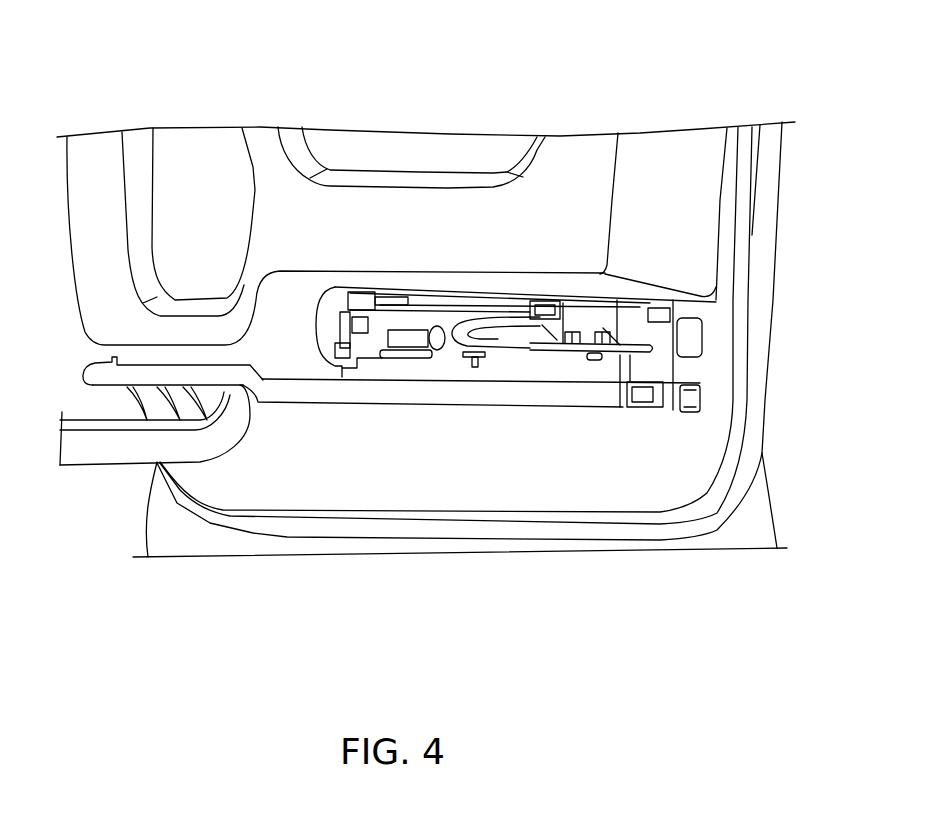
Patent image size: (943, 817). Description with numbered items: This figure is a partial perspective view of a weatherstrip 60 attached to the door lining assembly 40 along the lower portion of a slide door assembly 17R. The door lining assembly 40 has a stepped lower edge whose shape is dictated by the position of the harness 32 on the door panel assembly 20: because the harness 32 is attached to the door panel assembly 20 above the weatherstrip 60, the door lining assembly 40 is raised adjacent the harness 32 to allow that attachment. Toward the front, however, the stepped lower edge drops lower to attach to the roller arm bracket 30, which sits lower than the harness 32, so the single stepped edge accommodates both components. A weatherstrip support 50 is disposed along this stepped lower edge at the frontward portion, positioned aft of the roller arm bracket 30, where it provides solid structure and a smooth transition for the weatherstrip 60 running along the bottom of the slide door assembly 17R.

The slide door assembly 17R is at (97, 500).
The door panel assembly 20 is at (758, 277).
The roller arm bracket 30 is at (210, 440).
The harness 32 is at (502, 322).
The door lining assembly 40 is at (430, 238).
The weatherstrip support 50 is at (317, 412).
The weatherstrip 60 is at (455, 410).